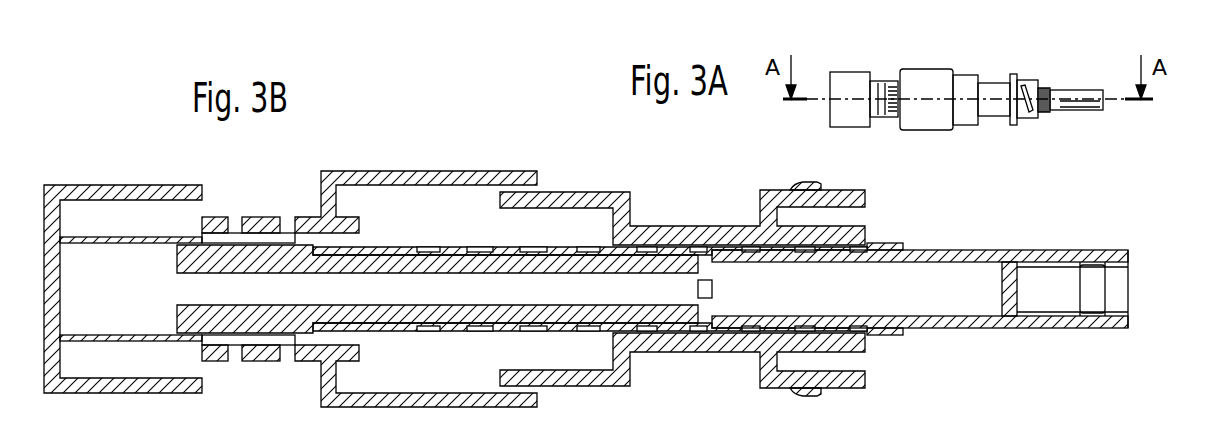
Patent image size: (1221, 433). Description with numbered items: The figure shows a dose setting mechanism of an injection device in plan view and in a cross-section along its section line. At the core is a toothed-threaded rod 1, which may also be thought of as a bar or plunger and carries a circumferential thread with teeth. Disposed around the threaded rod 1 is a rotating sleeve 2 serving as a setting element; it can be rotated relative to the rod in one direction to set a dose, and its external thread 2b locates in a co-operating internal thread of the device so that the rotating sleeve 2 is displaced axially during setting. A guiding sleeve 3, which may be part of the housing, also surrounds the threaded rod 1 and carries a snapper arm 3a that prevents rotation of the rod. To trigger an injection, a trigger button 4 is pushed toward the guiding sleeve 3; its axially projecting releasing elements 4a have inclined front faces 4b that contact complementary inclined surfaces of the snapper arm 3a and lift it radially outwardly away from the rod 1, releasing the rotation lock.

The toothed-threaded rod 1 is at (955, 250).
The rotating sleeve 2 is at (693, 228).
The external thread 2b is at (813, 182).
The guiding sleeve 3 is at (420, 172).
The snapper arm 3a is at (260, 228).
The trigger button 4 is at (114, 190).
The releasing elements 4a is at (188, 238).
The inclined front faces 4b is at (225, 338).